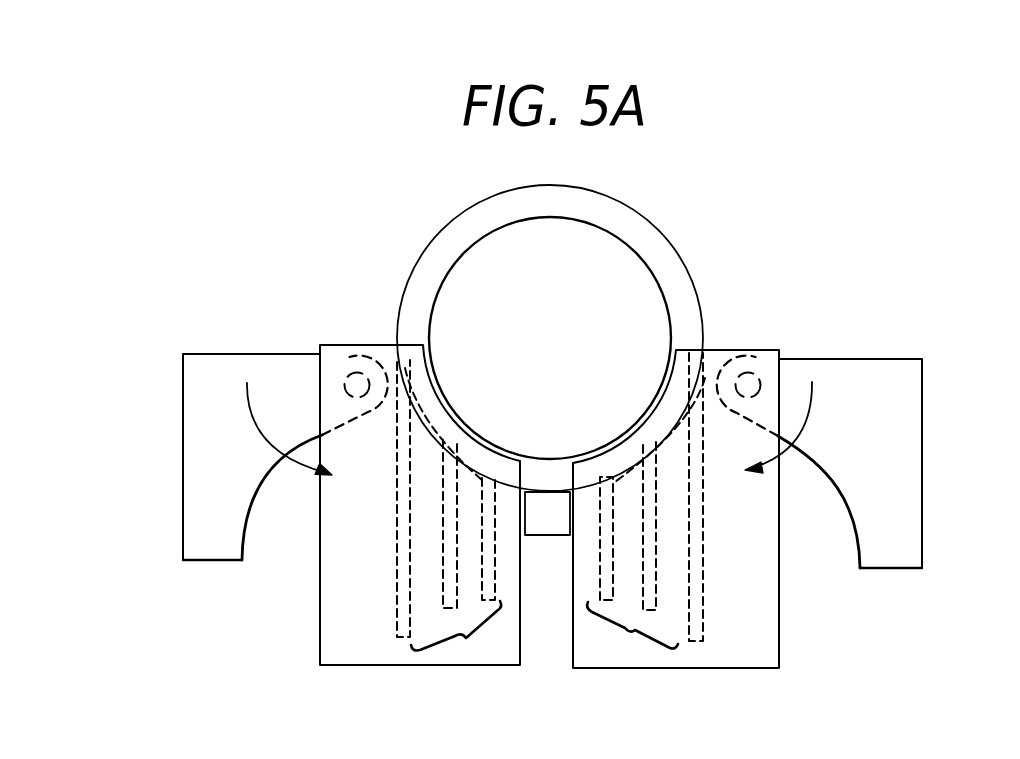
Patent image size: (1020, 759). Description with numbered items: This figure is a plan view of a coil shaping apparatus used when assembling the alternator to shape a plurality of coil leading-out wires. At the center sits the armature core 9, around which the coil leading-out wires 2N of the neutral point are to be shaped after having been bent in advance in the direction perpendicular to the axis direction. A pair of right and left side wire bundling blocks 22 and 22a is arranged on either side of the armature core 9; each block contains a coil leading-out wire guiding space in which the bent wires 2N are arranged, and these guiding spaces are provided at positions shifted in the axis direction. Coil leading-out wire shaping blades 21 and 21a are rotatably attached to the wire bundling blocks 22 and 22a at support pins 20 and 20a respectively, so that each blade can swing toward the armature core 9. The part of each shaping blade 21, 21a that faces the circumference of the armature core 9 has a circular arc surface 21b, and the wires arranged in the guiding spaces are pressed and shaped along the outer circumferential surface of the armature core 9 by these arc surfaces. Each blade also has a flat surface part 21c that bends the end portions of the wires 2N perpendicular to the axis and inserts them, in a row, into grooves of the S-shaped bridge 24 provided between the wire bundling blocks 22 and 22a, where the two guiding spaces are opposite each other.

The armature core 9 is at (658, 242).
The support pin 20 is at (752, 382).
The support pin 20a is at (350, 378).
The coil leading-out wire shaping blade 21 is at (912, 443).
The coil leading-out wire shaping blade 21a is at (183, 462).
The circular arc surface 21b is at (248, 512).
The flat surface part 21c is at (215, 560).
The wire bundling block 22 is at (776, 669).
The wire bundling block 22a is at (320, 665).
The S-shaped bridge 24 is at (548, 491).
The coil leading-out wires of the neutral point 2N is at (457, 640).